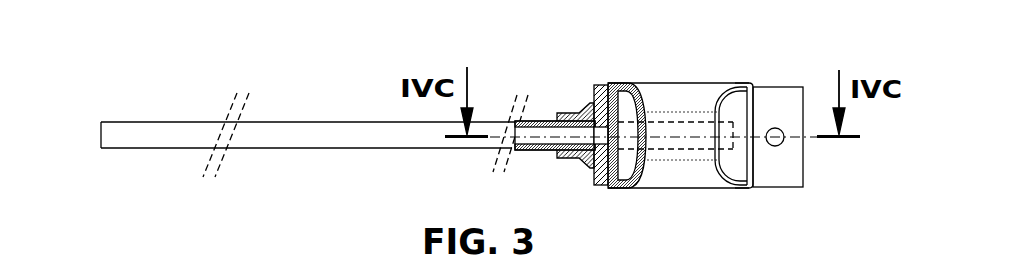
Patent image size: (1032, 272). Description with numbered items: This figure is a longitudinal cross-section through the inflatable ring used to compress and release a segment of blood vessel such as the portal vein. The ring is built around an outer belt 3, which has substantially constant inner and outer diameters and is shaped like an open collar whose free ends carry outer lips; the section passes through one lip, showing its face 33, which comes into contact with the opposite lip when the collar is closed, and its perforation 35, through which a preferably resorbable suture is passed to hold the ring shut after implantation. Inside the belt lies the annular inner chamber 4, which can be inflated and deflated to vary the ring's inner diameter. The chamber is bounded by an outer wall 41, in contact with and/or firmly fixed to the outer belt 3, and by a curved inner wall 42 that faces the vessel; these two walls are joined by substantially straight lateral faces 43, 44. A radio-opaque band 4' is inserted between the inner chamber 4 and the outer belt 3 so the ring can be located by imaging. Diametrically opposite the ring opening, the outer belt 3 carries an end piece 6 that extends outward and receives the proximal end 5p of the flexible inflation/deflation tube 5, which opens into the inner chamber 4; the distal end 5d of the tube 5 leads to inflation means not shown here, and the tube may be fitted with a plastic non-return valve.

The flexible inflation/deflation tube 5 is at (386, 149).
The distal end 5d is at (100, 142).
The proximal end 5p is at (584, 121).
The end piece 6 is at (563, 158).
The outer belt 3 is at (593, 180).
The inner chamber 4 is at (680, 97).
The radio-opaque band 4' is at (618, 113).
The outer wall 41 is at (747, 138).
The curved inner wall 42 is at (715, 138).
The lateral face 43 is at (743, 80).
The lateral face 44 is at (743, 188).
The face of outer lip 33 is at (788, 88).
The perforation 35 is at (787, 143).